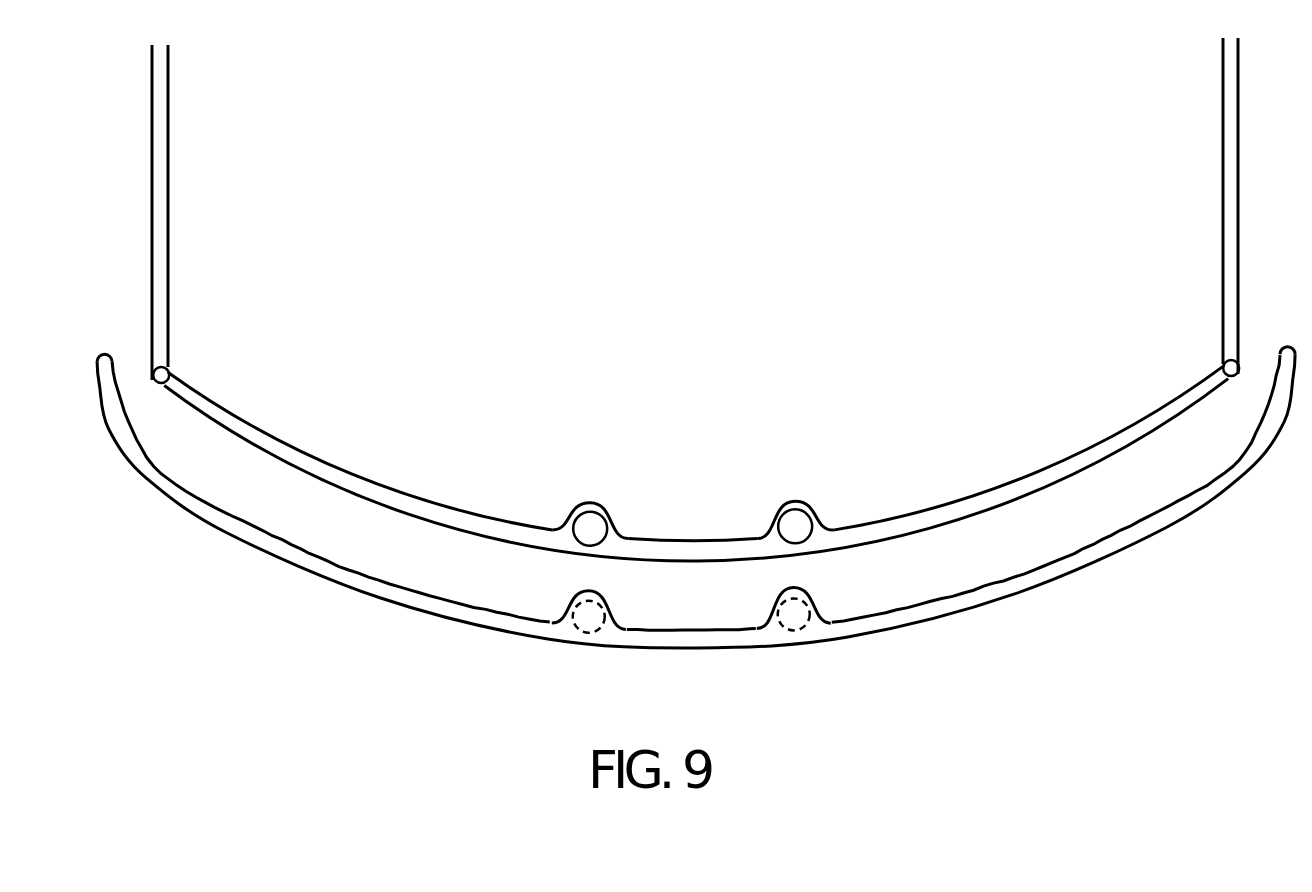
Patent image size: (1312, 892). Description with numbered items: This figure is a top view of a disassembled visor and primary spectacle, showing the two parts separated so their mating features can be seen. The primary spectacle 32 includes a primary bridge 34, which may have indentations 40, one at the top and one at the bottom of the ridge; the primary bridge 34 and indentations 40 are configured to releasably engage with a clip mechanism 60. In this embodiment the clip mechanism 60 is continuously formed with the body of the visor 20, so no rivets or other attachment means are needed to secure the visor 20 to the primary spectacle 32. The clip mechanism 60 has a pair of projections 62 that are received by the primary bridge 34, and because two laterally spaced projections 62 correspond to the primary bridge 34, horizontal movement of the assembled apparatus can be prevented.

The visor 20 is at (963, 641).
The primary spectacle 32 is at (400, 455).
The primary bridge 34 is at (668, 542).
The indentation 40 is at (590, 524).
The clip mechanism 60 is at (738, 625).
The projection 62 is at (768, 608).